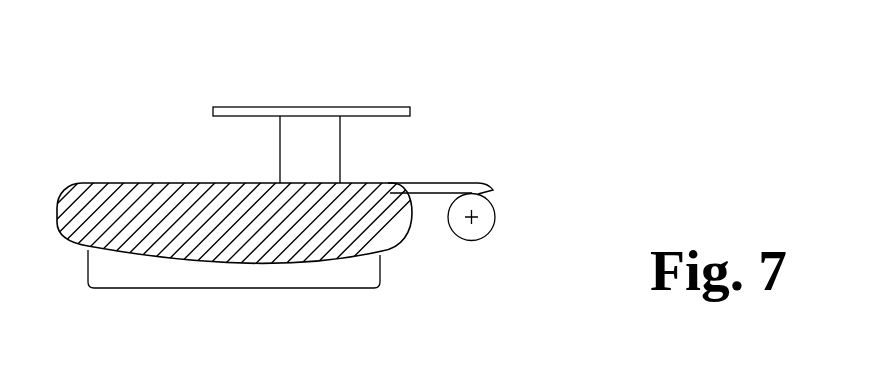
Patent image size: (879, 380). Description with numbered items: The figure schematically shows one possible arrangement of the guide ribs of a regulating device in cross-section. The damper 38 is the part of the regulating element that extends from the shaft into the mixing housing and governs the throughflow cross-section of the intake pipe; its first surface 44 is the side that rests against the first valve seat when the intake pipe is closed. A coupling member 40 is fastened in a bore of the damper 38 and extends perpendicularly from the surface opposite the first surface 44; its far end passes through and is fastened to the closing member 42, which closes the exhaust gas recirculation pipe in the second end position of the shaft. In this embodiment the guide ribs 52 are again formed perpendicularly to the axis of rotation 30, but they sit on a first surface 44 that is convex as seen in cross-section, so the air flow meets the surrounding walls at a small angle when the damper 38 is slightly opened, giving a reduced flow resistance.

The axis of rotation 30 is at (478, 217).
The damper 38 is at (400, 162).
The coupling member 40 is at (315, 166).
The closing member 42 is at (303, 110).
The first surface 44 is at (195, 262).
The guide ribs 52 is at (238, 271).